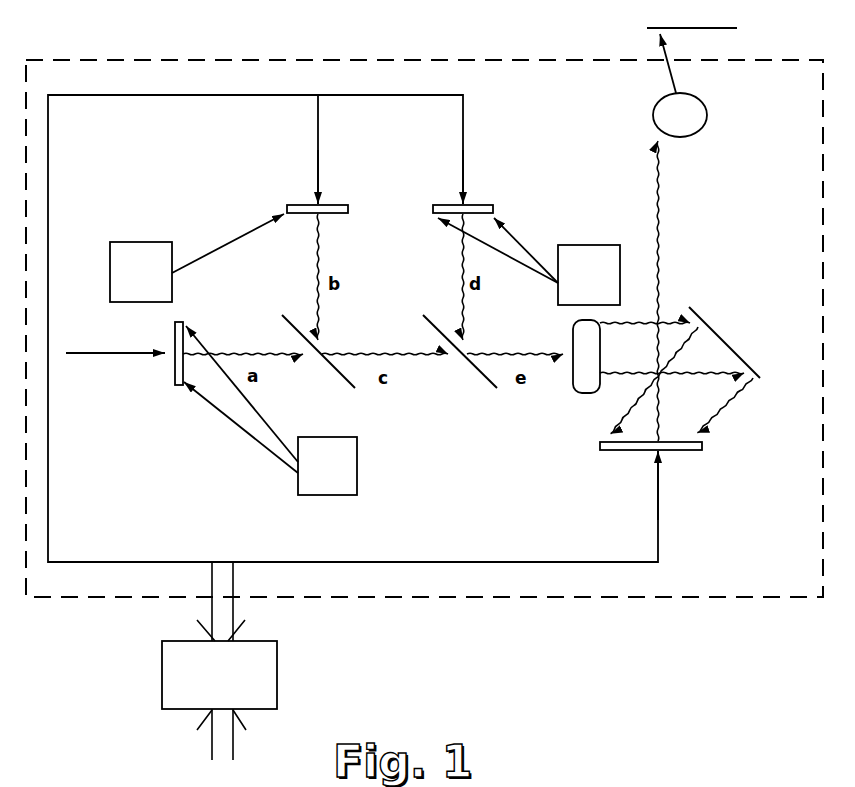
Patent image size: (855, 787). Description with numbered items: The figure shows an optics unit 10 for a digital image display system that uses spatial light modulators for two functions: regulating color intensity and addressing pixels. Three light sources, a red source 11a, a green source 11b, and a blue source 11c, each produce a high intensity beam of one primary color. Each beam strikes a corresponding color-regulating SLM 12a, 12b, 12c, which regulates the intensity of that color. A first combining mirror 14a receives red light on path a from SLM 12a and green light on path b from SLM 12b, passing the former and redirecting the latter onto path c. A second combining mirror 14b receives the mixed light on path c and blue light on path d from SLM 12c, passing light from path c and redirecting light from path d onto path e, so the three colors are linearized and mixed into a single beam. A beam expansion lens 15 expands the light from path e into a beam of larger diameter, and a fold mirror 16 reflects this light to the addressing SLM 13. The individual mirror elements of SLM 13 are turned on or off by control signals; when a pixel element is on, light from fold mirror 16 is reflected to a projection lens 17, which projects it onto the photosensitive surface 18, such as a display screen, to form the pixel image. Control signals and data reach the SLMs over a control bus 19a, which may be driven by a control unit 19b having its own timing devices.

The optics unit 10 is at (421, 52).
The red source 11a is at (322, 496).
The green source 11b is at (140, 242).
The blue source 11c is at (590, 245).
The color-regulating SLM 12a is at (175, 375).
The color-regulating SLM 12b is at (285, 206).
The color-regulating SLM 12c is at (435, 206).
The addressing SLM 13 is at (683, 451).
The first combining mirror 14a is at (323, 370).
The second combining mirror 14b is at (467, 370).
The beam expansion lens 15 is at (586, 356).
The fold mirror 16 is at (728, 345).
The projection lens 17 is at (680, 85).
The photosensitive surface 18 is at (703, 28).
The control bus 19a is at (207, 607).
The control unit 19b is at (219, 675).